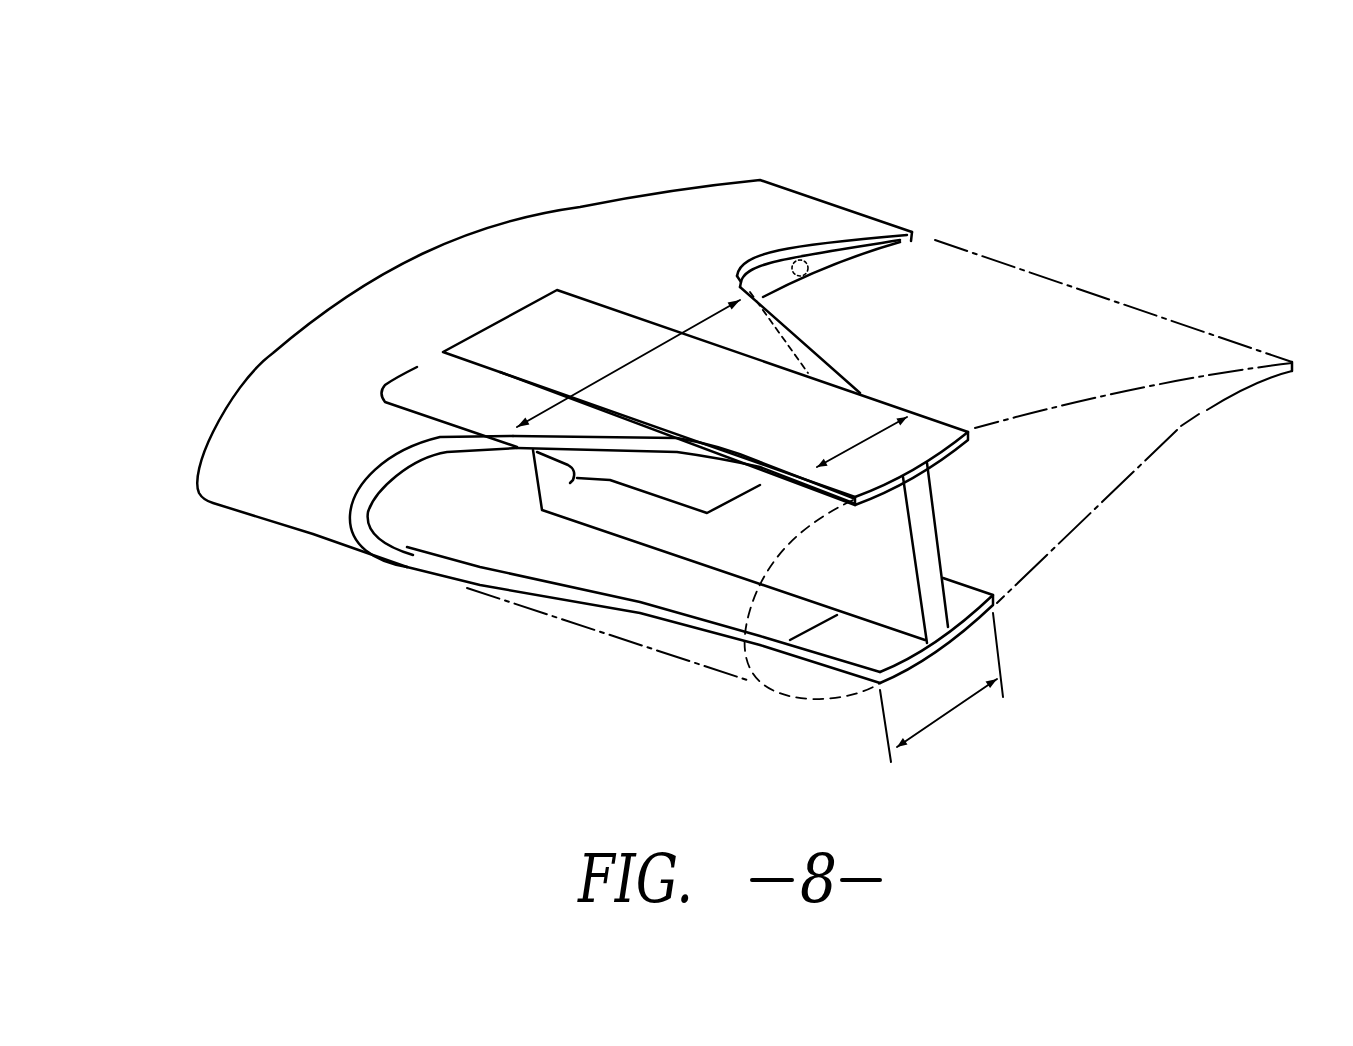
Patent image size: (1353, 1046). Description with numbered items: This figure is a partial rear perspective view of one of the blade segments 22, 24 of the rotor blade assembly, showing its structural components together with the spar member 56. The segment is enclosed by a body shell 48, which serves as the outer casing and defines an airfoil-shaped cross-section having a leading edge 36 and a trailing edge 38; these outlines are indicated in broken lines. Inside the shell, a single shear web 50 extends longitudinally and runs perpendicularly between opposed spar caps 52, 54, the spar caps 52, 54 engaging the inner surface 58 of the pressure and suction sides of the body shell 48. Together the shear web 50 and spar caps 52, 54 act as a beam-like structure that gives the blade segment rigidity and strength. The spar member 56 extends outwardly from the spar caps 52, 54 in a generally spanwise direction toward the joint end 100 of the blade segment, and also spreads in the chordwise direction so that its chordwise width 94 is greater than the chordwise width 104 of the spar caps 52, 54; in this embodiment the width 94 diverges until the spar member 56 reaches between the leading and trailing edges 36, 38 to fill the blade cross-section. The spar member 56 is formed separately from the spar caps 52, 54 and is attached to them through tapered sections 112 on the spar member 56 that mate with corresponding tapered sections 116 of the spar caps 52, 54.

The first blade segment 22 is at (554, 341).
The second blade segment 24 is at (554, 341).
The leading edge 36 is at (622, 635).
The trailing edge 38 is at (1040, 270).
The body shell 48 is at (1157, 303).
The shear web 50 is at (940, 547).
The pressure side spar cap 52 is at (846, 382).
The suction side spar cap 54 is at (972, 620).
The spar member 56 is at (298, 390).
The inner surface 58 is at (1133, 388).
The chordwise width of spar member 94 is at (704, 312).
The joint end 100 is at (340, 300).
The chordwise width of spar cap 104 is at (862, 443).
The tapered section of spar member 112 is at (445, 547).
The tapered section of spar cap 116 is at (540, 480).